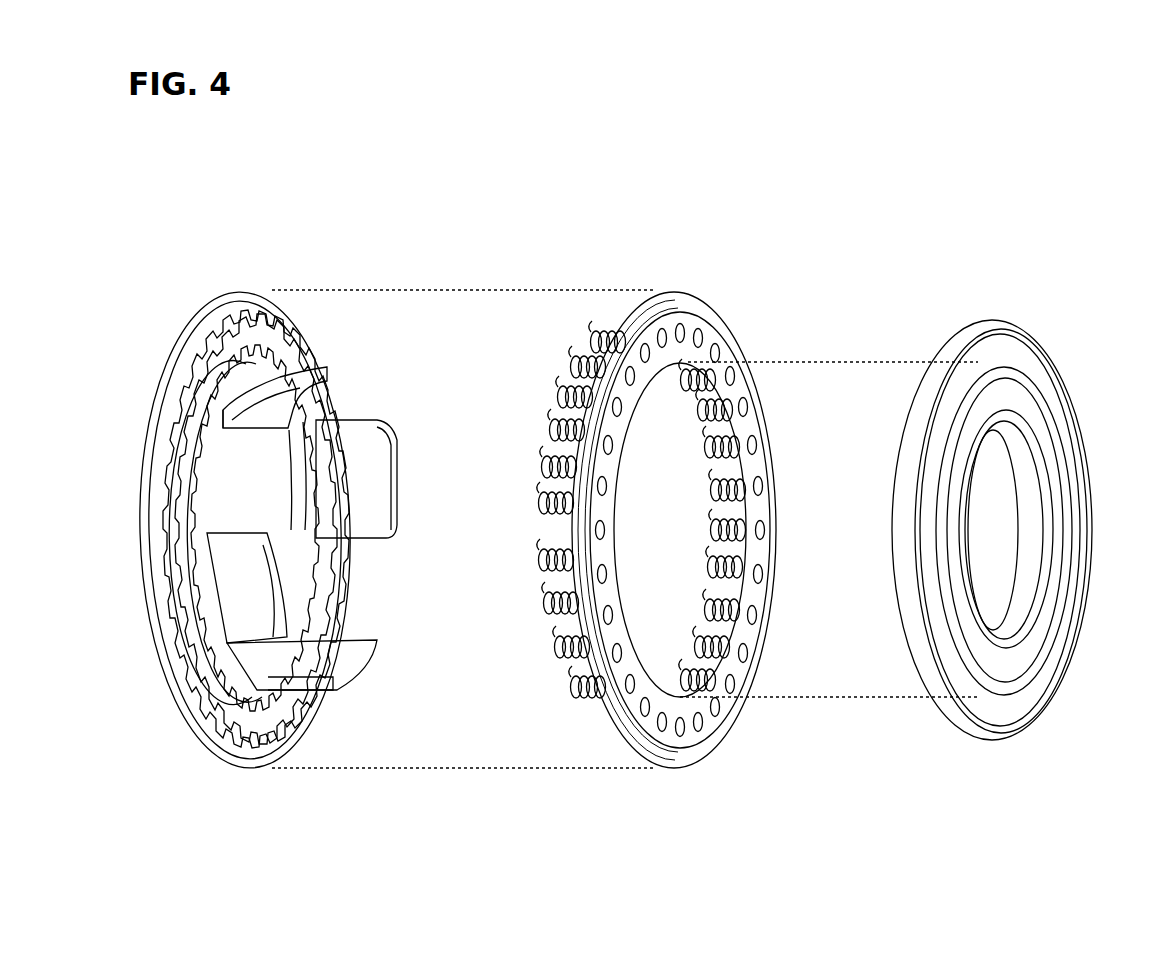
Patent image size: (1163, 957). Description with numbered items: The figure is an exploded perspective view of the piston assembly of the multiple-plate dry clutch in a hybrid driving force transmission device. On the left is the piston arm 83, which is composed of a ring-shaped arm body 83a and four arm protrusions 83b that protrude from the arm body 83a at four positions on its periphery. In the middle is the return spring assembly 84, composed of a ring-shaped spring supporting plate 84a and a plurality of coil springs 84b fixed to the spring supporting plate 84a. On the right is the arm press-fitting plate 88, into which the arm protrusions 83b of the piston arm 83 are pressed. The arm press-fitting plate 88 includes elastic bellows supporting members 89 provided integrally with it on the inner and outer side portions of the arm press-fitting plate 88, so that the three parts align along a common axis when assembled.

The piston arm 83 is at (301, 489).
The arm body 83a is at (222, 291).
The arm protrusions 83b is at (280, 385).
The return spring assembly 84 is at (689, 292).
The spring supporting plate 84a is at (767, 463).
The coil springs 84b is at (550, 512).
The arm press-fitting plate 88 is at (1013, 378).
The elastic bellows supporting members 89 is at (1013, 357).